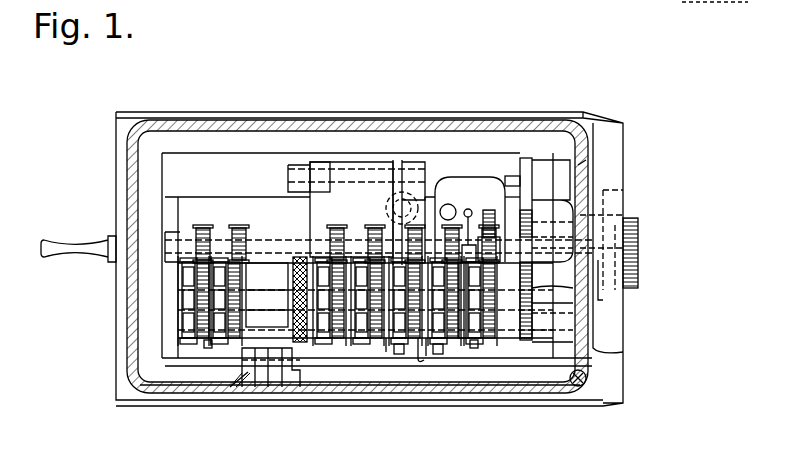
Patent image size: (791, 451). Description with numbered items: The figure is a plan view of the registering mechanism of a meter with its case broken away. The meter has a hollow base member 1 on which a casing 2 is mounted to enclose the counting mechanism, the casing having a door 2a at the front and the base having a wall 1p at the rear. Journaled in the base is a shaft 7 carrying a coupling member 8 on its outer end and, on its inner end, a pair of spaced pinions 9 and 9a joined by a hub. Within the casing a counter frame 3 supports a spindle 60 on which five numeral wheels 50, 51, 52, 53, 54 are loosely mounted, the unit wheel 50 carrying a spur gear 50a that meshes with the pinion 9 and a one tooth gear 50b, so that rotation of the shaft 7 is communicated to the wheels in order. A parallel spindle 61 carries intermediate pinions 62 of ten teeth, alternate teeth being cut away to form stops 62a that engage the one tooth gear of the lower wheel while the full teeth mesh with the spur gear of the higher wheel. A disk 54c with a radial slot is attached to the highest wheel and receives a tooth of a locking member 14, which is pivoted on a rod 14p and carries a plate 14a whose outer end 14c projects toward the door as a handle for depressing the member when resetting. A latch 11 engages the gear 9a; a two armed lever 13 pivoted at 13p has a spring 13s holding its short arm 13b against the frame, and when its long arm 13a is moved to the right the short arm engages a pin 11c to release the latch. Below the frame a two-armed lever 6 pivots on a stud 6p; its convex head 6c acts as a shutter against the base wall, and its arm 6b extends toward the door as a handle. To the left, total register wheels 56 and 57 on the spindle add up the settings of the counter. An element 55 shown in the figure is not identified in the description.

The base member 1 is at (130, 398).
The wall of the casing base 1p is at (612, 181).
The casing 2 is at (130, 192).
The door of the meter casing 2a is at (499, 388).
The counter frame 3 is at (172, 322).
The meter locking lever 6 is at (410, 198).
The stud 6p is at (394, 212).
The arm of the lever 6b is at (422, 356).
The convex head 6c is at (578, 164).
The shaft 7 is at (602, 263).
The coupling member 8 is at (638, 245).
The pinion 9 is at (490, 210).
The pinion 9a is at (532, 272).
The latch 11 is at (538, 174).
The pin 11c is at (521, 181).
The two armed lever 13 is at (470, 191).
The pivot 13p is at (448, 204).
The short arm 13b is at (524, 172).
The spring 13s is at (508, 233).
The long arm 13a is at (428, 356).
The locking member 14 is at (322, 192).
The rod 14p is at (318, 178).
The plate 14a is at (398, 182).
The outer end of the plate 14c is at (390, 350).
The unit wheel 50 is at (470, 340).
The spur gear 50a is at (200, 338).
The one tooth gear 50b is at (210, 348).
The tens wheel 51 is at (437, 354).
The hundreds wheel 52 is at (399, 354).
The tens of dollars wheel 53 is at (366, 342).
The hundreds of dollars wheel 54 is at (333, 342).
The disk 54c is at (318, 262).
The spacer block 55 is at (299, 258).
The total register numeral wheel 56 is at (228, 322).
The total register numeral wheel 57 is at (183, 298).
The spindle 60 is at (262, 246).
The spindle 61 is at (176, 233).
The pinion 62 is at (203, 229).
The stop 62a is at (243, 229).